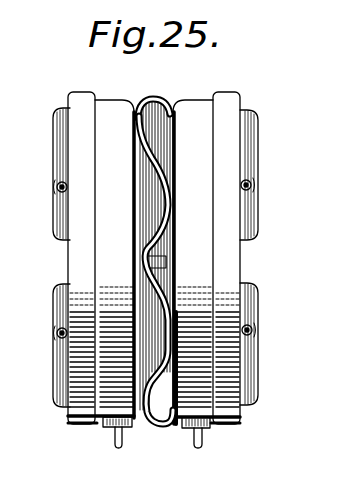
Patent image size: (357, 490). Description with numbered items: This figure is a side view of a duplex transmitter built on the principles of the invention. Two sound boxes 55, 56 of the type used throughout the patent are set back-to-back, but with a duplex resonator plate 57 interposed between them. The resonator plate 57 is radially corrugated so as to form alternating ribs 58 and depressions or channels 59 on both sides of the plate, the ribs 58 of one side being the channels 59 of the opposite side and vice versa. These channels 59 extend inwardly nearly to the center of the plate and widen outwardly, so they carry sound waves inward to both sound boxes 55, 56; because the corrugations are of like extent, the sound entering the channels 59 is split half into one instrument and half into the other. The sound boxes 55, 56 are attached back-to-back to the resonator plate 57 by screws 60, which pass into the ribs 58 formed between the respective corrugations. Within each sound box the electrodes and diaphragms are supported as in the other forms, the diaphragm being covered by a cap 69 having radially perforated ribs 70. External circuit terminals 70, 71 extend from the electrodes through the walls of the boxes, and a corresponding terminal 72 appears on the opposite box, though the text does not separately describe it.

The sound box 55 is at (108, 108).
The sound box 56 is at (193, 108).
The duplex resonator plate 57 is at (155, 97).
The ribs 58 is at (172, 100).
The depressions or channels 59 is at (172, 136).
The screws 60 is at (170, 262).
The cap 69 is at (72, 257).
The radially perforated ribs 70 is at (53, 165).
The external circuit terminal 71 is at (115, 437).
The right terminal pin 72 is at (205, 445).